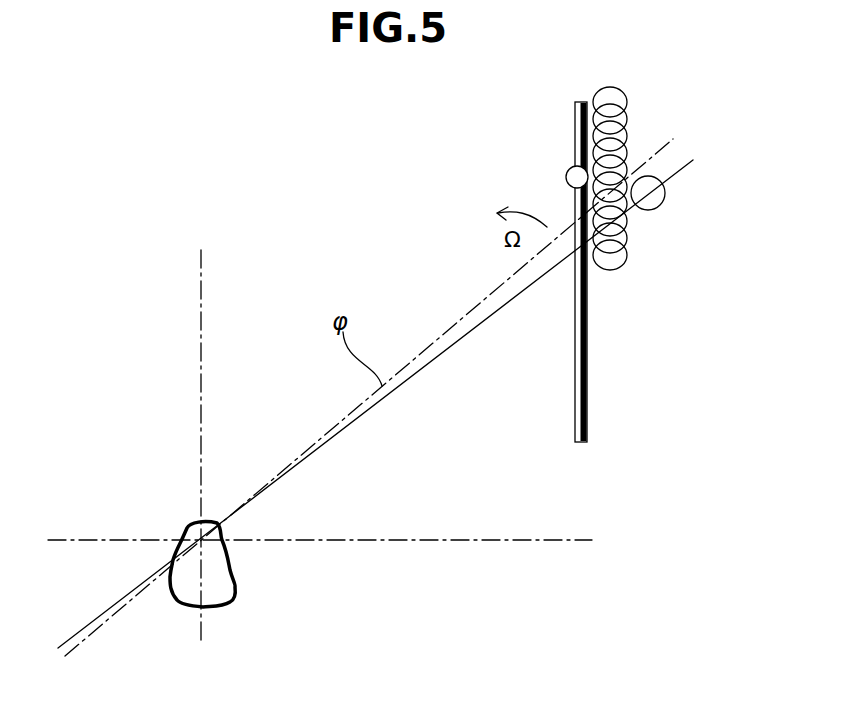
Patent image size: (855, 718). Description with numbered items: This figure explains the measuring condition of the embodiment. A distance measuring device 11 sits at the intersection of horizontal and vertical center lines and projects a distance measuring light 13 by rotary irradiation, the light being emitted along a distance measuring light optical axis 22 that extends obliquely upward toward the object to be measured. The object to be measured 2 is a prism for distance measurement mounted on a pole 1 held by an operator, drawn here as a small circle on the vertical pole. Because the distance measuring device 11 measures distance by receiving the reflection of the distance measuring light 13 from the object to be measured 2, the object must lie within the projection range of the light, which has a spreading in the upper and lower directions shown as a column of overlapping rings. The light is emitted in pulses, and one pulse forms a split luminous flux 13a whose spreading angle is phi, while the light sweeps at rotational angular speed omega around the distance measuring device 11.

The pole 1 is at (574, 128).
The object to be measured 2 is at (565, 176).
The distance measuring light 13 is at (634, 78).
The split luminous flux 13a is at (625, 182).
The distance measuring light optical axis 22 is at (422, 352).
The distance measuring device 11 is at (235, 590).